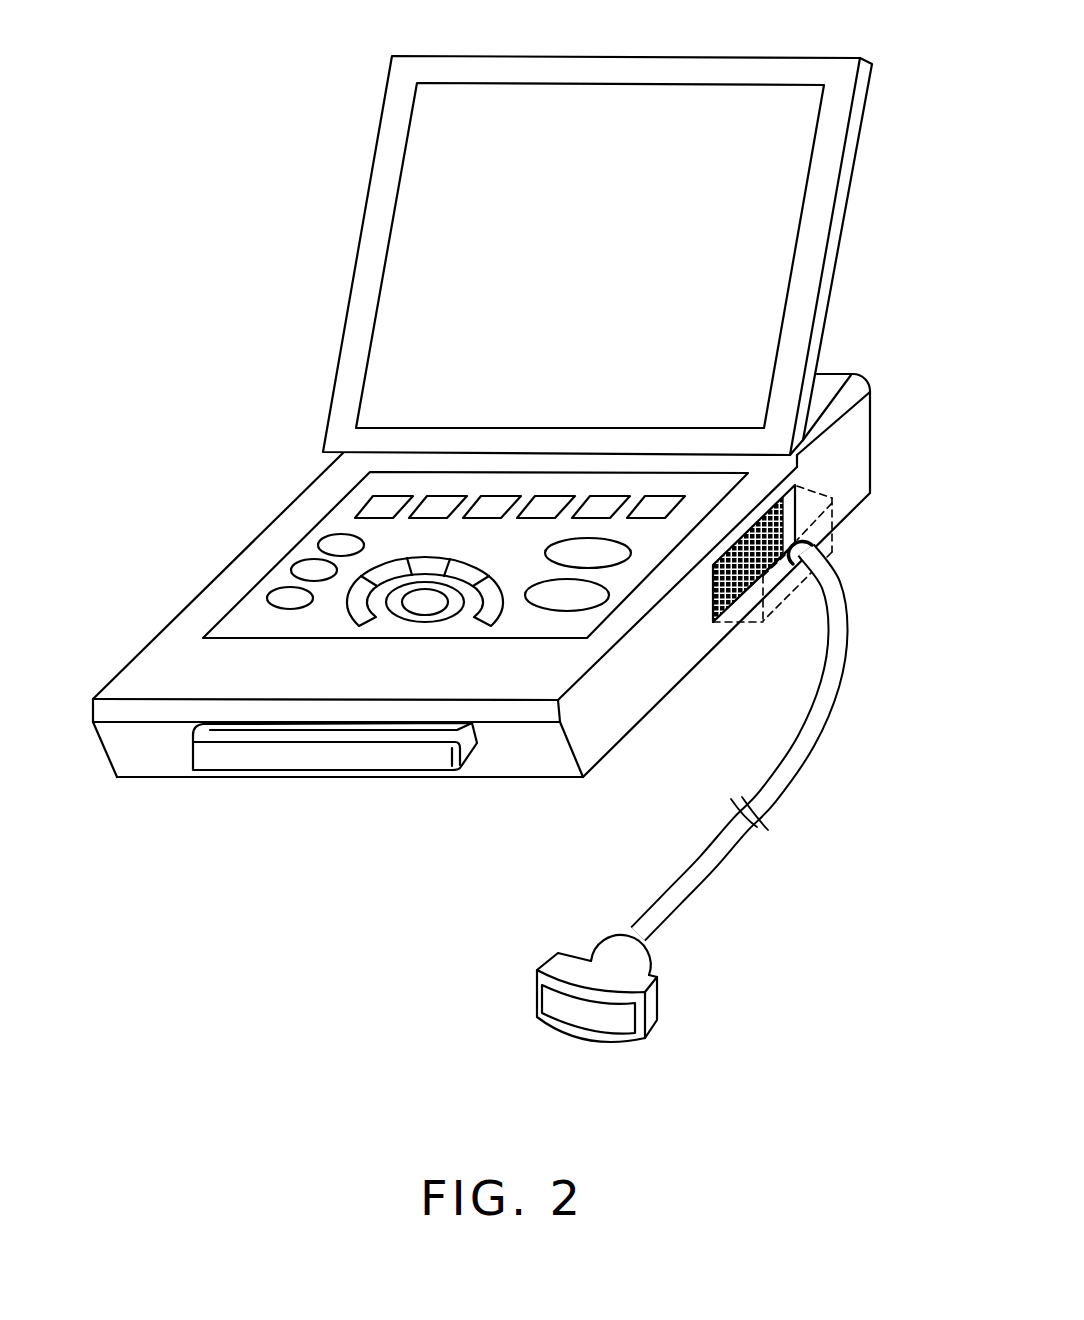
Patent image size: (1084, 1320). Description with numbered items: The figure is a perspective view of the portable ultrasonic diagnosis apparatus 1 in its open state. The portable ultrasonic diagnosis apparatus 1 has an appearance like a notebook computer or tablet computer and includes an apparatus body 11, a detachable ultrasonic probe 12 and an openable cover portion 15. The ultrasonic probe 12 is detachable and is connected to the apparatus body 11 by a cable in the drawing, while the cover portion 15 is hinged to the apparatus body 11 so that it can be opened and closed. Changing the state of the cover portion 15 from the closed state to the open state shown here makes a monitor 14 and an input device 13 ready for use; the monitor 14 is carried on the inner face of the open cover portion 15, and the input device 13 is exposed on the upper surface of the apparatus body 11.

The portable ultrasonic diagnosis apparatus 1 is at (399, 982).
The apparatus body 11 is at (873, 441).
The detachable ultrasonic probe 12 is at (653, 1034).
The input device 13 is at (245, 615).
The monitor 14 is at (410, 258).
The openable cover portion 15 is at (372, 165).